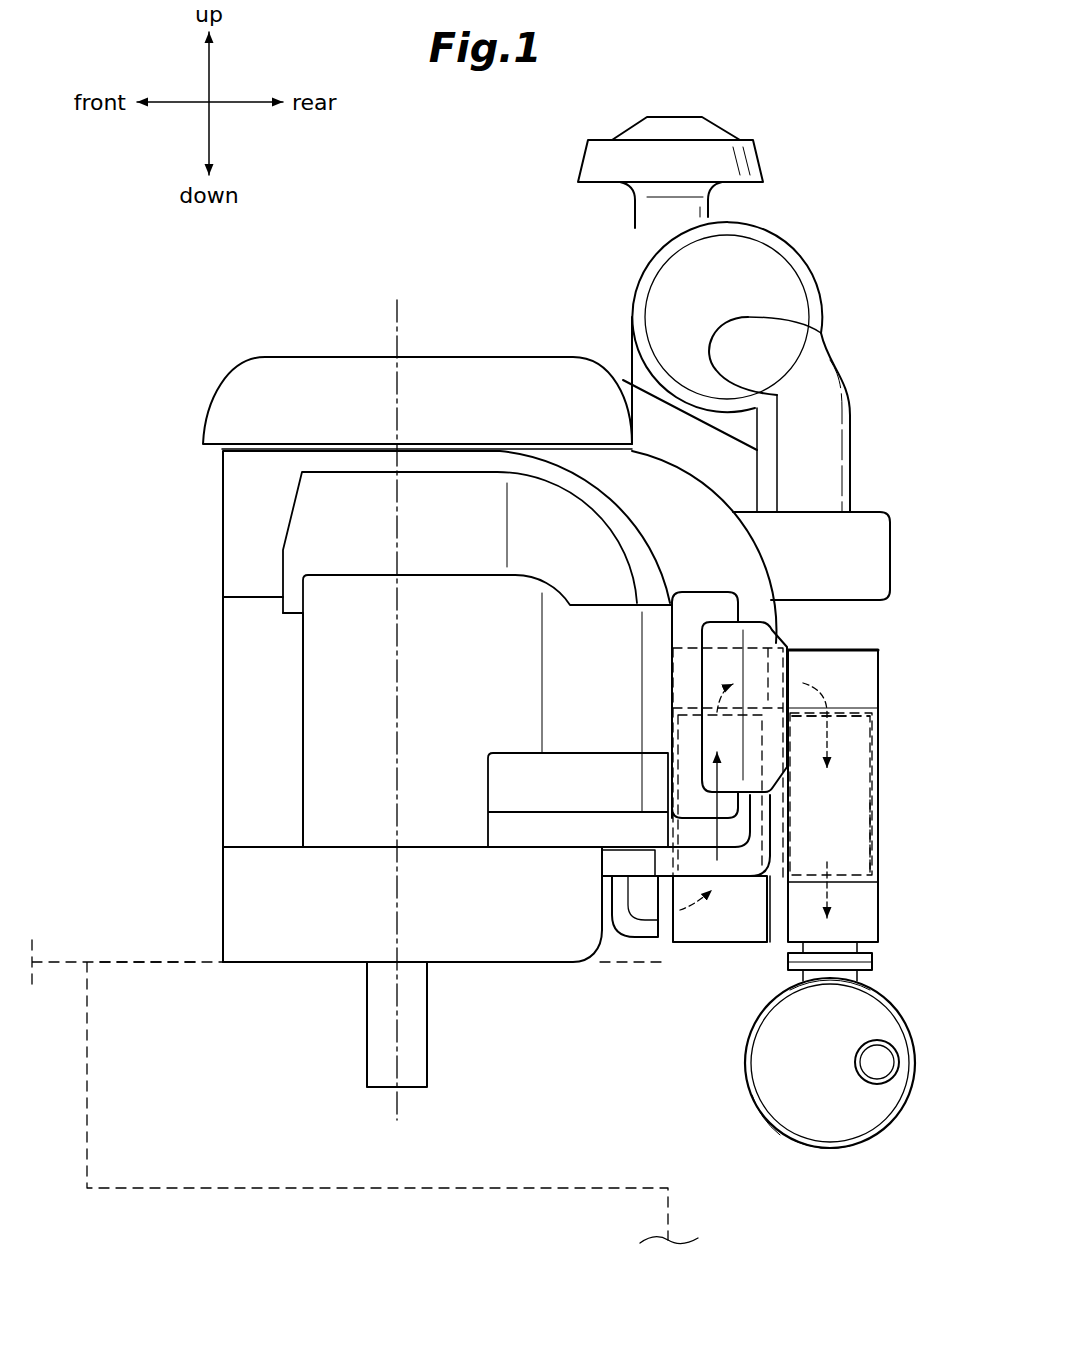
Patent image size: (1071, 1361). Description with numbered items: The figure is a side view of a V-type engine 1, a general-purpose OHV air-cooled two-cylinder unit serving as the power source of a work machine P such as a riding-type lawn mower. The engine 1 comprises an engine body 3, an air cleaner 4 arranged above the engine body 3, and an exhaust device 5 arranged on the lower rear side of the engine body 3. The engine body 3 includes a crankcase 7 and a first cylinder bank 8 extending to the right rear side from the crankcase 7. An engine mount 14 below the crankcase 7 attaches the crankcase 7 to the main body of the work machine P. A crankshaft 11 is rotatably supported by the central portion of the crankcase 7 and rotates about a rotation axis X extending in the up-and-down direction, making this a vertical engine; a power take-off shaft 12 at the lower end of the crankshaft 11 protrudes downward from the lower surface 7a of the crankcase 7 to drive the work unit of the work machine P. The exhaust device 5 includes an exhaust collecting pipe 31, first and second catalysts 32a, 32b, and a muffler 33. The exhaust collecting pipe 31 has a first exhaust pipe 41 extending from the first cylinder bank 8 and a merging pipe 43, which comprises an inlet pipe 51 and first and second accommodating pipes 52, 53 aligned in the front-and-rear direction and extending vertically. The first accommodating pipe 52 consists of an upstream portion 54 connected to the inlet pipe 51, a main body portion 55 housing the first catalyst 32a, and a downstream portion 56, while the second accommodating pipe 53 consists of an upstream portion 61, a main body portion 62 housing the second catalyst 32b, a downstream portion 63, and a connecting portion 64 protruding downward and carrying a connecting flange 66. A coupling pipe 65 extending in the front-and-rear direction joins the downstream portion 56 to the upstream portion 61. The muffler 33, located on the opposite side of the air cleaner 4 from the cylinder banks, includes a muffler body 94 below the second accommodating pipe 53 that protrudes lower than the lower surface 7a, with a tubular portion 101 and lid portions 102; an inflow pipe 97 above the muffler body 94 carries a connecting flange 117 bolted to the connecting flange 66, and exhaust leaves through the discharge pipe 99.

The engine 1 is at (236, 340).
The engine body 3 is at (245, 974).
The air cleaner 4 is at (809, 216).
The exhaust device 5 is at (886, 1149).
The crankcase 7 is at (520, 972).
The lower surface of crankcase 7a is at (463, 964).
The first cylinder bank 8 is at (801, 640).
The crankshaft 11 is at (440, 1068).
The power take-off shaft 12 is at (367, 1073).
The engine mount 14 is at (145, 960).
The exhaust collecting pipe 31 is at (883, 829).
The first catalyst 32a is at (767, 808).
The second catalyst 32b is at (873, 808).
The muffler 33 is at (771, 1136).
The first exhaust pipe 41 is at (605, 907).
The merging pipe 43 is at (702, 949).
The inlet pipe 51 is at (658, 937).
The first accommodating pipe 52 is at (738, 949).
The second accommodating pipe 53 is at (889, 651).
The upstream portion 54 is at (757, 947).
The main body portion 55 is at (775, 848).
The downstream portion 56 is at (723, 650).
The upstream portion 61 is at (880, 678).
The main body portion 62 is at (880, 722).
The downstream portion 63 is at (880, 893).
The connecting portion 64 is at (860, 947).
The coupling pipe 65 is at (790, 641).
The connecting flange 66 is at (873, 957).
The muffler body 94 is at (811, 1154).
The inflow pipe 97 is at (860, 980).
The discharge pipe 99 is at (877, 1084).
The tubular portion 101 is at (833, 1150).
The lid portion 102 is at (763, 1072).
The connecting flange 117 is at (873, 973).
The work machine P is at (48, 957).
The rotation axis X is at (397, 728).